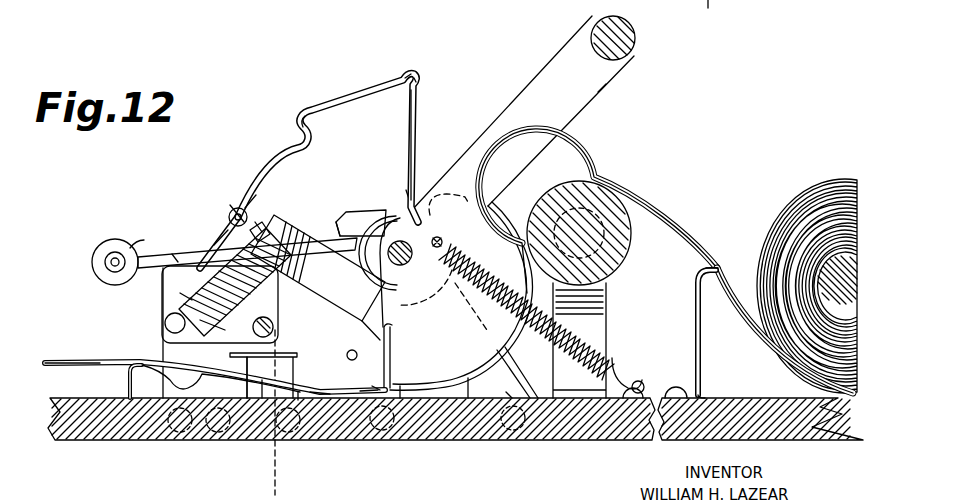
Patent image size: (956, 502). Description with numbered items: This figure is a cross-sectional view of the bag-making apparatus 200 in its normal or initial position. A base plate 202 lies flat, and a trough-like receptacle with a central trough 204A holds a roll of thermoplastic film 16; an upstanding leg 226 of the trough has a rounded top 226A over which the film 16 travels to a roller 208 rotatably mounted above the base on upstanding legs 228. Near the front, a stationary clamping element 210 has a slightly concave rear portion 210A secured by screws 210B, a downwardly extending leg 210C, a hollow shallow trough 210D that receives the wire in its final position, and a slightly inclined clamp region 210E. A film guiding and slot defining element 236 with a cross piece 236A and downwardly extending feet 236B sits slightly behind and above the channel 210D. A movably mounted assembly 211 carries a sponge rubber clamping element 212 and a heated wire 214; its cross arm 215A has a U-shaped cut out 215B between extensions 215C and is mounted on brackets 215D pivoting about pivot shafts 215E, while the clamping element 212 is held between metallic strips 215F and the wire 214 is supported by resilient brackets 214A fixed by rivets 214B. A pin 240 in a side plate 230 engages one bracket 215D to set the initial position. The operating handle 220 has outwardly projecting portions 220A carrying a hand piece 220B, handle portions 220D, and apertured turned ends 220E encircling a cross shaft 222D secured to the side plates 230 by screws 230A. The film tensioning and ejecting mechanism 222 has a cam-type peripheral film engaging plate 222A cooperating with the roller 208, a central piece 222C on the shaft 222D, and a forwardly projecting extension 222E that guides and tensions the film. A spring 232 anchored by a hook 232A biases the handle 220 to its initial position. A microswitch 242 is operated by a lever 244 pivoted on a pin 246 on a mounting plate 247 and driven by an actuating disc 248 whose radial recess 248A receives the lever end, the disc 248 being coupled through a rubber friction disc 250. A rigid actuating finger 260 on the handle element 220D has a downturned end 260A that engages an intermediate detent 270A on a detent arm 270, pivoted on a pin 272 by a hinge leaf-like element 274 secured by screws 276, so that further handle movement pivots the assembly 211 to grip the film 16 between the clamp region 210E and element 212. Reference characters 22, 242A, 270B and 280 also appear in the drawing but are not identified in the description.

The thermoplastic film 16 is at (838, 180).
The support rail 22 is at (693, 4).
The apparatus 200 is at (747, 121).
The base plate 202 is at (600, 440).
The central trough 204A is at (748, 340).
The roller 208 is at (592, 195).
The stationary clamping element 210 is at (142, 400).
The concave rear portion 210A is at (322, 400).
The screws 210B is at (368, 400).
The downwardly extending leg 210C is at (128, 375).
The hollow shallow trough 210D is at (185, 390).
The inclined clamp region 210E is at (140, 364).
The movably mounted assembly 211 is at (232, 210).
The clamping element 212 is at (160, 300).
The heated wire element 214 is at (205, 318).
The resilient brackets 214A is at (225, 330).
The rivets 214B is at (258, 222).
The cross arm 215A is at (266, 230).
The U-shaped cut out portion 215B is at (280, 248).
The extensions 215C is at (345, 322).
The brackets 215D is at (298, 400).
The pivot shafts 215E is at (267, 416).
The metallic strips 215F is at (180, 293).
The operating handle 220 is at (553, 62).
The outwardly projecting portions 220A is at (604, 89).
The hand piece 220B is at (636, 40).
The handle portions 220D is at (406, 195).
The apertured turned ends 220E is at (460, 296).
The film tensioning and ejecting mechanism 222 is at (452, 332).
The peripheral film engaging plate 222A is at (468, 400).
The central piece 222C is at (405, 400).
The cross shaft 222D is at (437, 236).
The forwardly projecting extension 222E is at (372, 400).
The upstanding leg 226 is at (695, 308).
The rounded top 226A is at (702, 268).
The upstanding legs 228 is at (608, 290).
The side plates 230 is at (530, 400).
The screws 230A is at (508, 400).
The spring 232 is at (625, 356).
The hook 232A is at (640, 381).
The film guiding and slot defining element 236 is at (233, 400).
The cross piece 236A is at (252, 400).
The downwardly extending feet 236B is at (262, 400).
The pin 240 is at (388, 342).
The microswitch 242 is at (140, 270).
The link bar pivot 242A is at (175, 255).
The lever 244 is at (132, 250).
The pin 246 is at (107, 245).
The mounting plate 247 is at (93, 250).
The actuating disc 248 is at (370, 212).
The radial recess 248A is at (338, 226).
The rubber friction disc 250 is at (388, 240).
The actuating finger 260 is at (414, 108).
The downturned free end portion 260A is at (417, 78).
The detent arm 270 is at (316, 118).
The intermediate detent 270A is at (310, 124).
The rod upper end 270B is at (407, 70).
The pin 272 is at (236, 208).
The hinge leaf-like element 274 is at (255, 198).
The screws 276 is at (212, 238).
The spring hook 280 is at (447, 188).